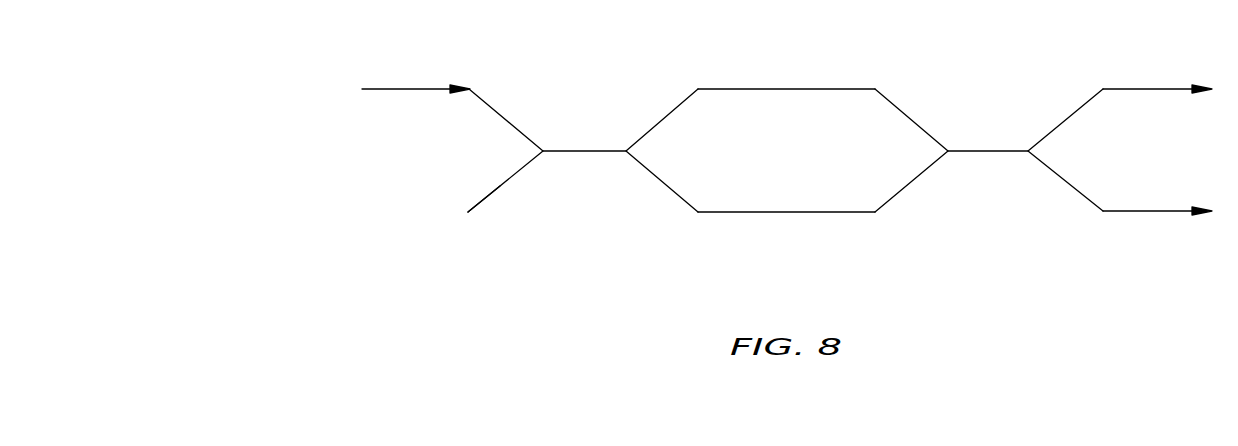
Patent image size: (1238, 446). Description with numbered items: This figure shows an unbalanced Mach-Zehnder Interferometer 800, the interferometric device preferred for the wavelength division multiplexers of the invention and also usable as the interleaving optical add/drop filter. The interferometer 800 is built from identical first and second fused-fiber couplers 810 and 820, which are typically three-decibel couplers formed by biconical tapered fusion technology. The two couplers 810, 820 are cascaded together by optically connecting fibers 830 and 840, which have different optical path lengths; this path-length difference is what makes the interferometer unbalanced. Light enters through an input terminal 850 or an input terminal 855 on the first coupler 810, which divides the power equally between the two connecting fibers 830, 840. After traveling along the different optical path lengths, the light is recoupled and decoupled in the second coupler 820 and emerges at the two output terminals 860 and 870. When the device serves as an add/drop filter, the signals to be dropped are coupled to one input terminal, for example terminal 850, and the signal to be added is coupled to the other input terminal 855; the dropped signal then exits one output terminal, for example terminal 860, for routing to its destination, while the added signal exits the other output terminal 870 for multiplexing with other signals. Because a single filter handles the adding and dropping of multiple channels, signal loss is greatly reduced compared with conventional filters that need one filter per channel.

The unbalanced Mach-Zehnder Interferometer 800 is at (578, 232).
The first fused-fiber coupler 810 is at (583, 114).
The second fused-fiber coupler 820 is at (989, 114).
The optically connecting fiber 830 is at (815, 89).
The optically connecting fiber 840 is at (738, 212).
The input terminal 850 is at (469, 89).
The input terminal 855 is at (468, 212).
The output terminal 860 is at (1103, 89).
The output terminal 870 is at (1103, 211).